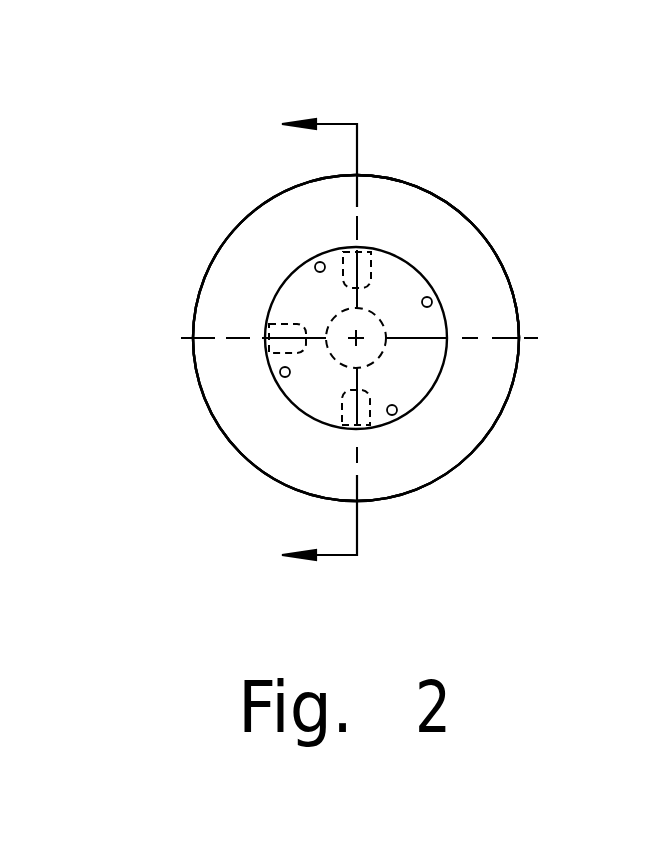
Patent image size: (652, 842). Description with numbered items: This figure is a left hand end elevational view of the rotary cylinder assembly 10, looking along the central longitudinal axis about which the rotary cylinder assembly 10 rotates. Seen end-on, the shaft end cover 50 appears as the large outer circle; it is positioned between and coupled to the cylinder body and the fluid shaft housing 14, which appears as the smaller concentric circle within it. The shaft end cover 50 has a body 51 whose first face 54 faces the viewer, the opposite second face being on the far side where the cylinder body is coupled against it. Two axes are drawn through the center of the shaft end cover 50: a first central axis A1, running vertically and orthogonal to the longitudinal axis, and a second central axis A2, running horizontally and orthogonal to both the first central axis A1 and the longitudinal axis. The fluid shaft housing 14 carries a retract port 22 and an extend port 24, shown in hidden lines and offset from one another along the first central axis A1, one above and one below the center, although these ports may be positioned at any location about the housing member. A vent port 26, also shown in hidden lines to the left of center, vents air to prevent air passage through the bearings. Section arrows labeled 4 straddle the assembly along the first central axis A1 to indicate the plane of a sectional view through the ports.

The rotary cylinder assembly 10 is at (486, 563).
The fluid shaft housing 14 is at (283, 393).
The retract port 22 is at (343, 252).
The extend port 24 is at (342, 404).
The vent port 26 is at (292, 324).
The shaft end cover 50 is at (517, 384).
The body 51 is at (417, 185).
The first face 54 is at (472, 262).
The first central axis A1 is at (358, 168).
The second central axis A2 is at (535, 338).
The section line 4- 4 is at (303, 342).